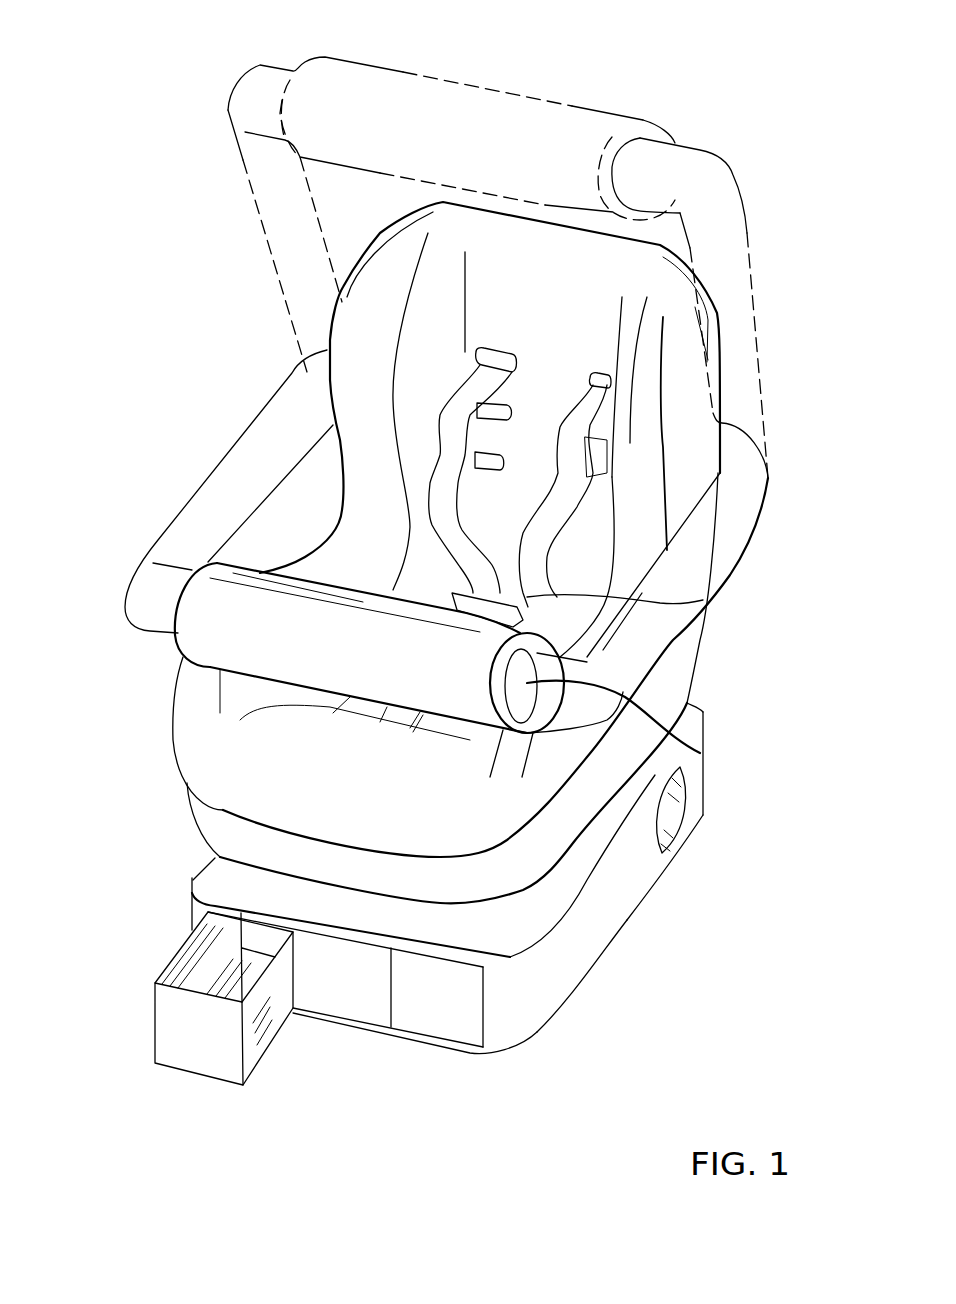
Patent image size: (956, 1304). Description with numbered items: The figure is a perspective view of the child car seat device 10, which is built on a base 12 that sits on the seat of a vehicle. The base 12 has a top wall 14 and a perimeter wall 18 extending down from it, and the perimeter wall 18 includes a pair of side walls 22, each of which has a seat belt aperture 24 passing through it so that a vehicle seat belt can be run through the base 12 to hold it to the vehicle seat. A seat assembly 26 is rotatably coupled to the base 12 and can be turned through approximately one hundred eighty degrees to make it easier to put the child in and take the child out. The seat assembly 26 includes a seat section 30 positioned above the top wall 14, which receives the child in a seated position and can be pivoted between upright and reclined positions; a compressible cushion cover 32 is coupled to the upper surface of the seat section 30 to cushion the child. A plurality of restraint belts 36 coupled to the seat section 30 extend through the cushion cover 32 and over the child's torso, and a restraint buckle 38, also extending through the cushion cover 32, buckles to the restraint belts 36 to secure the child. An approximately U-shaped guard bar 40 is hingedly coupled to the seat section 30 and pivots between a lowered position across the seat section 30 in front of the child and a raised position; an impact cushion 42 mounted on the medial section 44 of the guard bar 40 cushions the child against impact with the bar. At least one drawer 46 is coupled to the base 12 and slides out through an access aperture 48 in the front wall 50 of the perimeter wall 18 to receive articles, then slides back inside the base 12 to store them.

The child car seat device 10 is at (712, 116).
The base 12 is at (537, 1032).
The top wall 14 is at (687, 693).
The perimeter wall 18 is at (603, 937).
The side walls 22 is at (623, 888).
The seat belt aperture 24 is at (677, 812).
The seat assembly 26 is at (720, 332).
The seat section 30 is at (220, 817).
The cushion cover 32 is at (185, 725).
The restraint belts 36 is at (458, 410).
The restraint buckle 38 is at (703, 600).
The guard bar 40 is at (227, 502).
The impact cushion 42 is at (217, 632).
The medial section 44 is at (700, 753).
The drawer 46 is at (188, 1062).
The access aperture 48 is at (485, 993).
The front wall 50 is at (373, 1032).